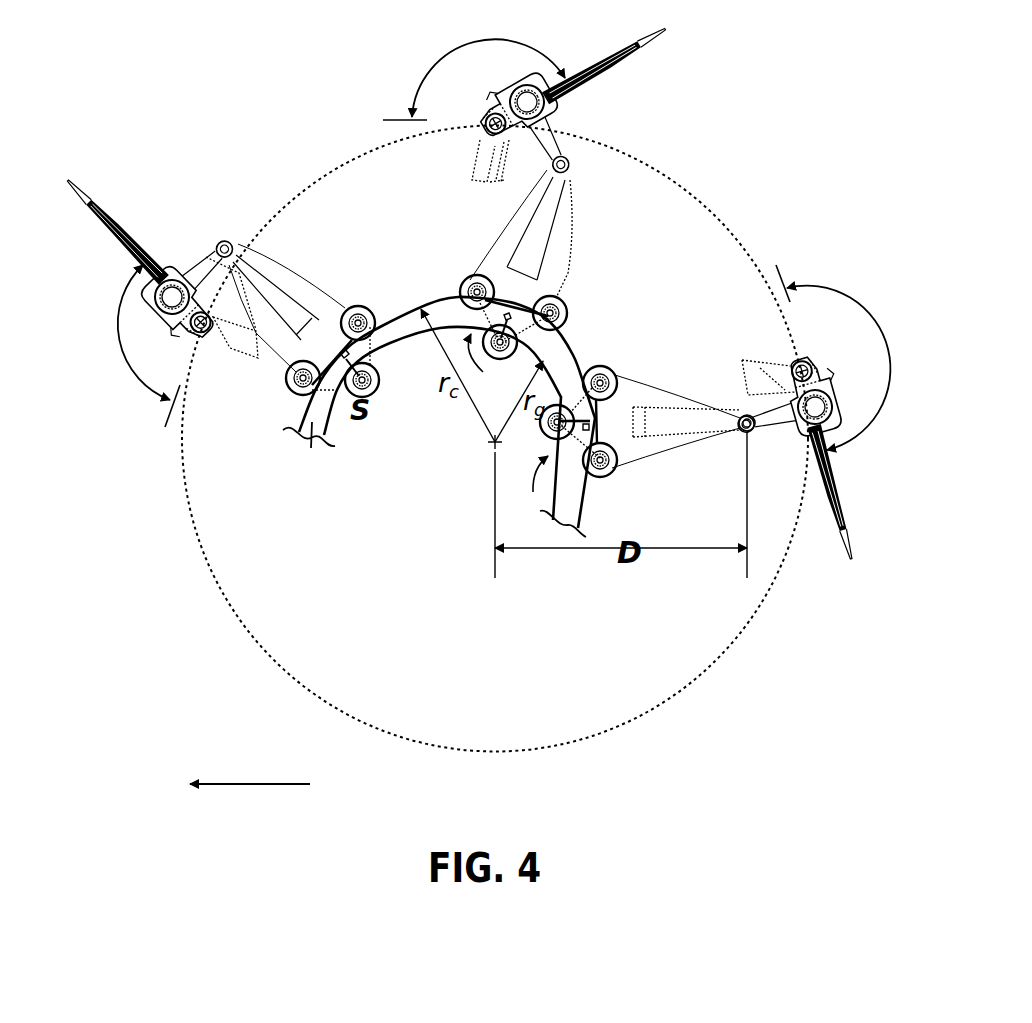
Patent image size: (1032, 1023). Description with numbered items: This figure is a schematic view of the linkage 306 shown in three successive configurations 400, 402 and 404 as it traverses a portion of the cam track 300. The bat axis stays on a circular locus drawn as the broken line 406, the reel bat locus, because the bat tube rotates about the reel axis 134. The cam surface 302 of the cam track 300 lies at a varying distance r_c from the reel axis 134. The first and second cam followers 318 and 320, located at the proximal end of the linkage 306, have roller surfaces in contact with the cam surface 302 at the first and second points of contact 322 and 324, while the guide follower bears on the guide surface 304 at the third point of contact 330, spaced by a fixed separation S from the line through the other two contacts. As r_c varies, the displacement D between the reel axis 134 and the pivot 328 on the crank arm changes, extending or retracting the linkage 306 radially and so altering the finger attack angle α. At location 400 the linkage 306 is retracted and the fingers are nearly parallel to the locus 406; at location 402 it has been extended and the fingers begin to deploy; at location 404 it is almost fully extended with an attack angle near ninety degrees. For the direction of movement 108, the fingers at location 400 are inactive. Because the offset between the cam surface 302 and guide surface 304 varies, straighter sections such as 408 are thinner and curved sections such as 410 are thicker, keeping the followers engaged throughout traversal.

The direction of movement 108 is at (233, 782).
The reel axis 134 is at (490, 446).
The cam track 300 is at (463, 383).
The cam surface 302 is at (447, 300).
The guide surface 304 is at (583, 362).
The linkage 306 is at (326, 296).
The first cam follower 318 is at (615, 372).
The second cam follower 320 is at (606, 477).
The first point of contact 322 is at (298, 398).
The second point of contact 324 is at (372, 320).
The pivot 328 is at (742, 414).
The third point of contact 330 is at (362, 372).
The first location 400 is at (840, 480).
The second location 402 is at (605, 100).
The third location 404 is at (155, 207).
The reel bat locus 406 is at (688, 180).
The straighter section of cam track 408 is at (534, 488).
The curved section of cam track 410 is at (496, 366).